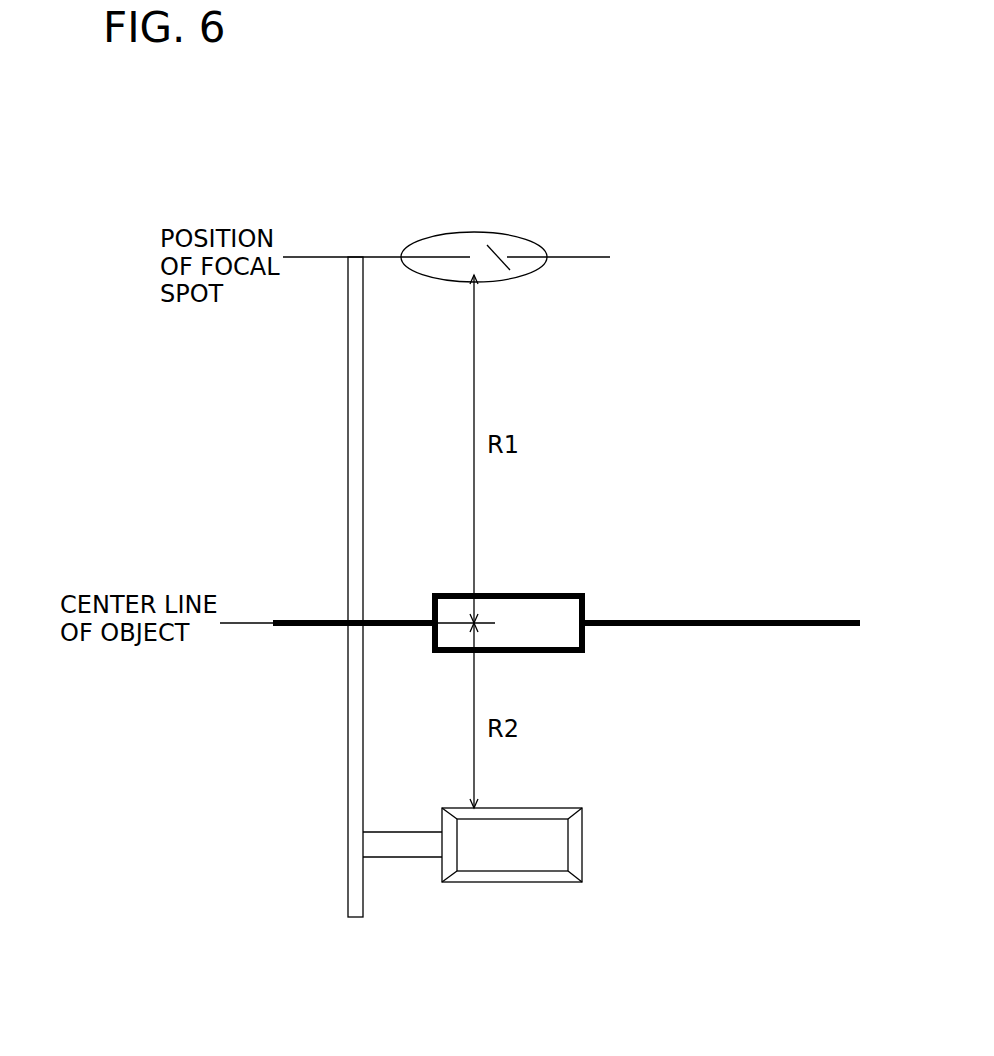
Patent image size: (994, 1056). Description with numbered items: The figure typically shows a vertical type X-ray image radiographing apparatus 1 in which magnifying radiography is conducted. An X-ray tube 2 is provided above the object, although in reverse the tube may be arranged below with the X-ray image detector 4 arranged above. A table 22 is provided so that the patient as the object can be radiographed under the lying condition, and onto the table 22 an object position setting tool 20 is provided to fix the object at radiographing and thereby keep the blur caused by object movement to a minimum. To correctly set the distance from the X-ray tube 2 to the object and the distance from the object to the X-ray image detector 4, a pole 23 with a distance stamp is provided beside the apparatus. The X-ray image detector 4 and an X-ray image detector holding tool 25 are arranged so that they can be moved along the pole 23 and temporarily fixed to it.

The X-ray image radiographing apparatus 1 is at (318, 181).
The X-ray tube 2 is at (533, 275).
The X-ray image detector 4 is at (553, 845).
The object position setting tool 20 is at (548, 593).
The table 22 is at (825, 598).
The pole 23 is at (348, 417).
The X-ray image detector holding tool 25 is at (512, 882).